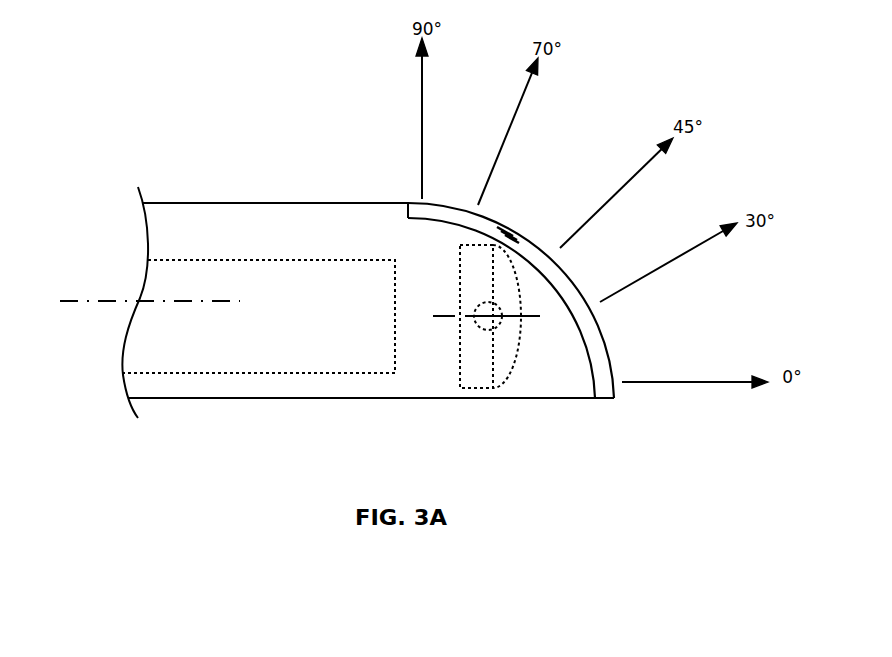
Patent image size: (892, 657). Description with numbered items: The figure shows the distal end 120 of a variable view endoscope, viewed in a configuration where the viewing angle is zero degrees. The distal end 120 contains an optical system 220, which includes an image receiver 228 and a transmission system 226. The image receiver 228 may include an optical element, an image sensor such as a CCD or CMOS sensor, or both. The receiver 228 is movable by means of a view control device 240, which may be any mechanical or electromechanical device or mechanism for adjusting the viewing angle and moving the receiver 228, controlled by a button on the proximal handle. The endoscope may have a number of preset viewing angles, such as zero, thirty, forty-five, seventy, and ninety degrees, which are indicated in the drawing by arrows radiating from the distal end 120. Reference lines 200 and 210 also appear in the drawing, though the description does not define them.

The distal end 120 is at (356, 203).
The optical axis 200 is at (102, 300).
The curved window 210 is at (433, 202).
The optical system 220 is at (331, 303).
The transmission system 226 is at (217, 260).
The image receiver 228 is at (488, 388).
The view control device 240 is at (480, 327).